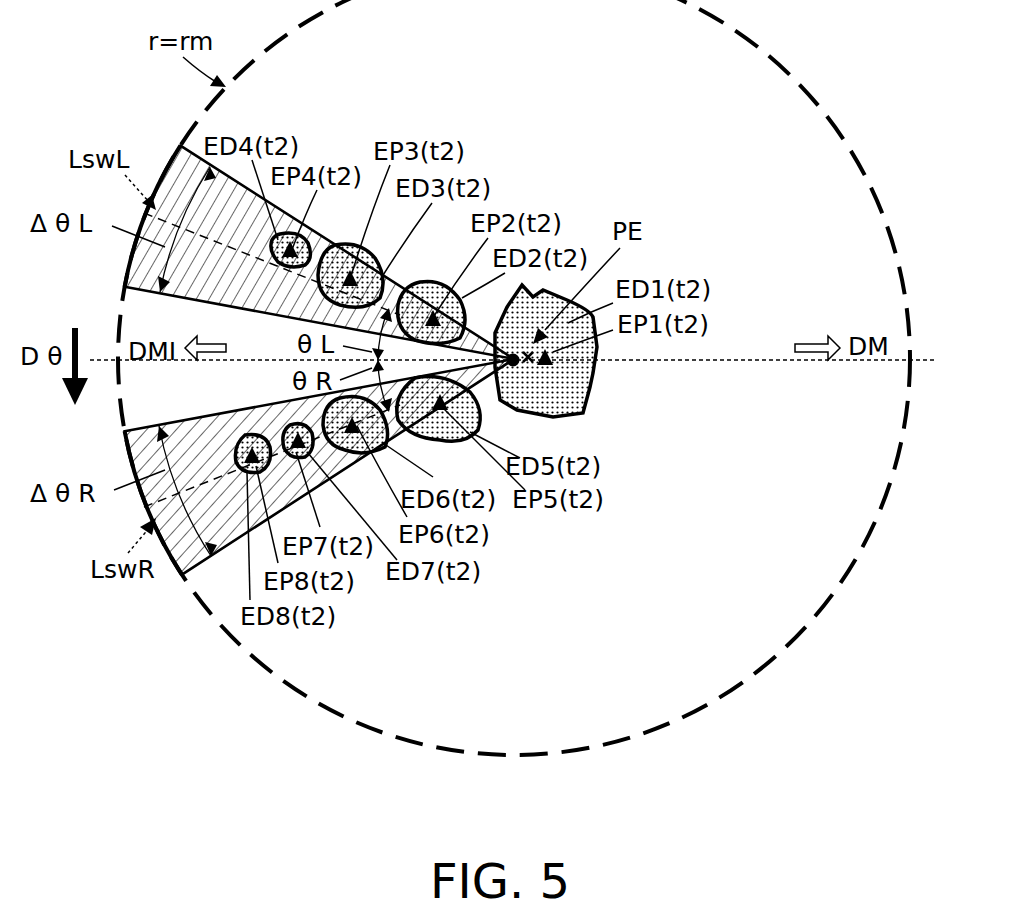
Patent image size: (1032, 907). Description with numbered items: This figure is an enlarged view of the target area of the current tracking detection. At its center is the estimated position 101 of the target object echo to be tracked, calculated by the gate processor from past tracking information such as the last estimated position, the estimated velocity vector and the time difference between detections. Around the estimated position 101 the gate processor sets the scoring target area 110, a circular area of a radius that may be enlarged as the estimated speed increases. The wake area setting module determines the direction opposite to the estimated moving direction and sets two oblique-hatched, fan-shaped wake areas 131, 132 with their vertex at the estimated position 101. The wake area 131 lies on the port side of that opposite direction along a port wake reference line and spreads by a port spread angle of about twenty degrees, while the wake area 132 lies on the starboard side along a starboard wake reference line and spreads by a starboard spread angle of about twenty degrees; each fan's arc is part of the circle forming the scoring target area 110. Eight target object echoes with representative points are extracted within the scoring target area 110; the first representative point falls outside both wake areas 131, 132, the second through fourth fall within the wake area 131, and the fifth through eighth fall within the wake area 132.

The scoring target area 110 is at (758, 76).
The wake area 131 is at (180, 147).
The wake area 132 is at (183, 575).
The estimated position 101 is at (527, 380).